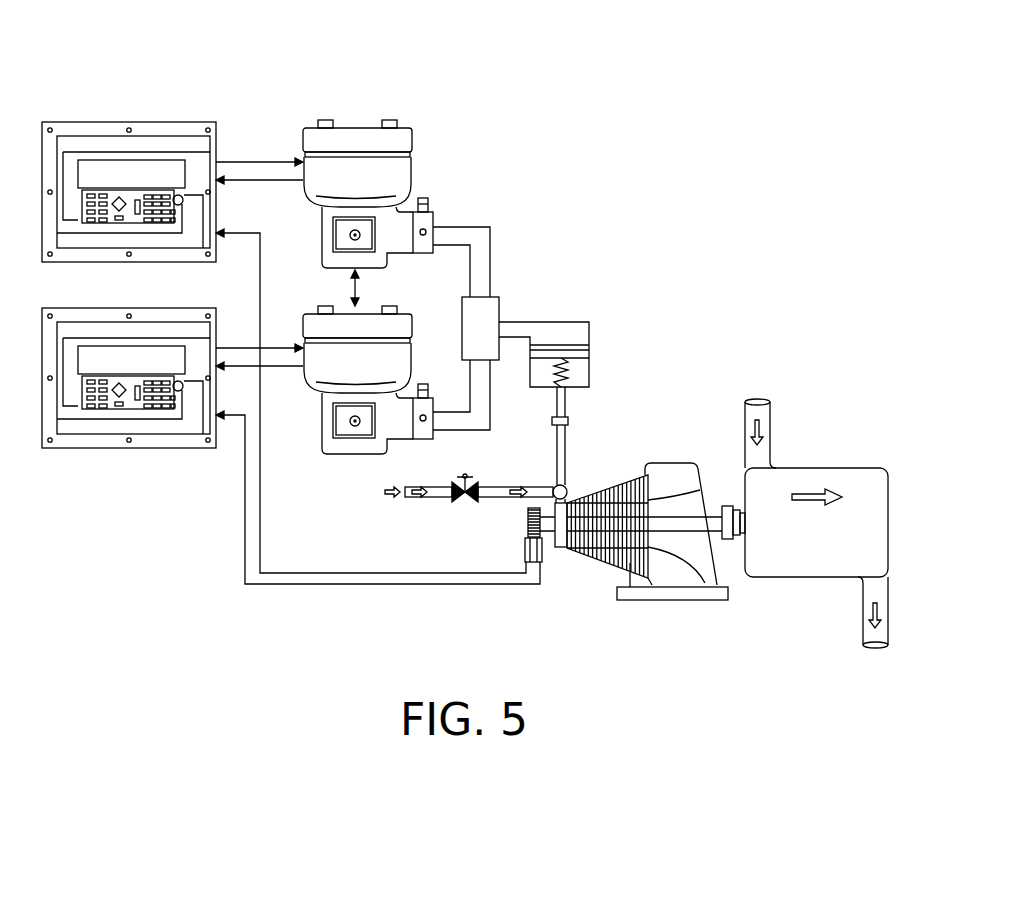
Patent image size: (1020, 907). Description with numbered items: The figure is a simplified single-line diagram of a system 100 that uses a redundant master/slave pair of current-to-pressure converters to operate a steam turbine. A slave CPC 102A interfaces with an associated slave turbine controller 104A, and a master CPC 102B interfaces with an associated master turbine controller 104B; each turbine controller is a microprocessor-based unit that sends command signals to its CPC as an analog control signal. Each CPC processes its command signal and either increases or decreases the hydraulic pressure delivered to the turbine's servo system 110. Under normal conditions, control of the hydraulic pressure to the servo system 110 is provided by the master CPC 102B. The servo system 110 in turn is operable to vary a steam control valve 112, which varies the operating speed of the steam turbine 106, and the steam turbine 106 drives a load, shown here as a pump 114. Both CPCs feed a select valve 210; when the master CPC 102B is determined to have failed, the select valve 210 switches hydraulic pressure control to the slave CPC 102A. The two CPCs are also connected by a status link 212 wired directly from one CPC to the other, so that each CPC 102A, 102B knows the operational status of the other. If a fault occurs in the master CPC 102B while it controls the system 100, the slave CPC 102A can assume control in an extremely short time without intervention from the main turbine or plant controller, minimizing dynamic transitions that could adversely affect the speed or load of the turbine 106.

The system 100 is at (632, 203).
The slave CPC 102A is at (415, 178).
The master CPC 102B is at (322, 442).
The slave turbine controller 104A is at (108, 122).
The master turbine controller 104B is at (212, 450).
The steam turbine 106 is at (663, 463).
The servo system 110 is at (590, 330).
The steam control valve 112 is at (565, 487).
The pump 114 is at (840, 468).
The select valve 210 is at (500, 297).
The status link 212 is at (368, 291).